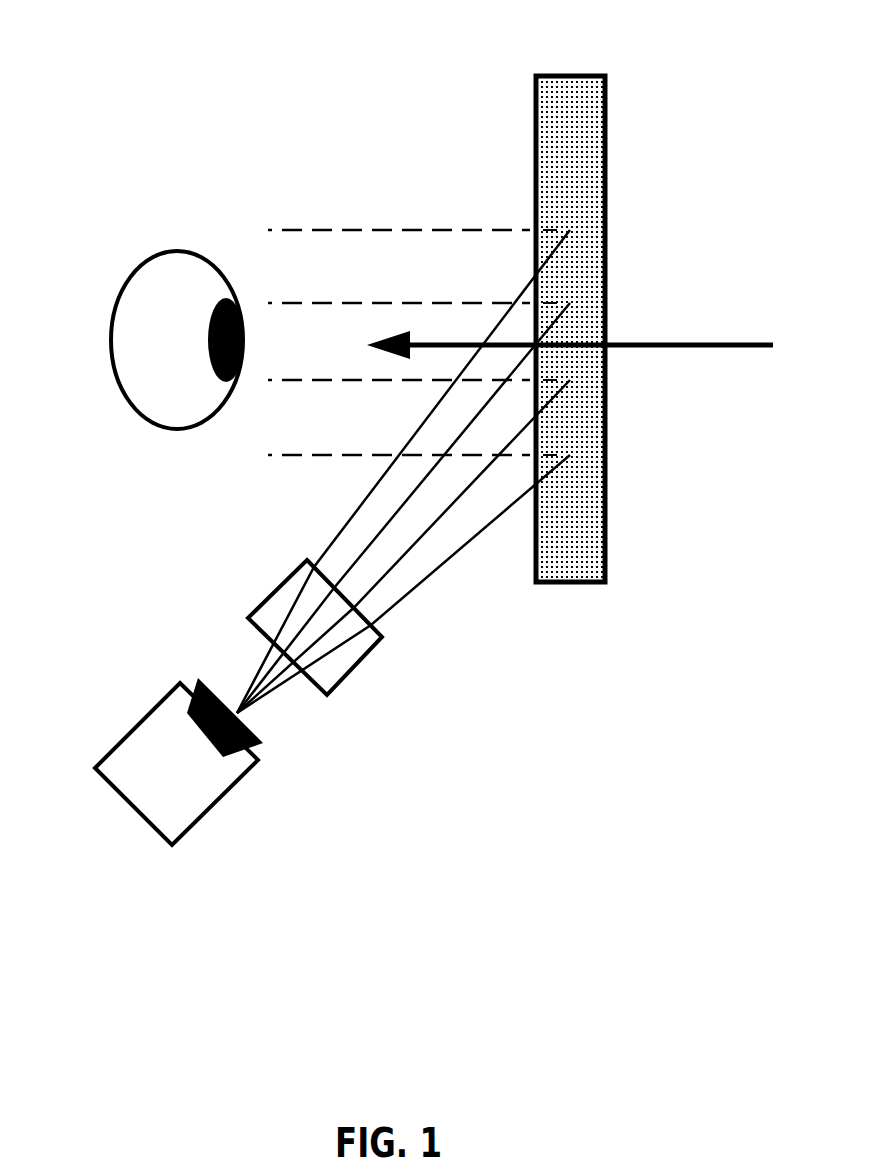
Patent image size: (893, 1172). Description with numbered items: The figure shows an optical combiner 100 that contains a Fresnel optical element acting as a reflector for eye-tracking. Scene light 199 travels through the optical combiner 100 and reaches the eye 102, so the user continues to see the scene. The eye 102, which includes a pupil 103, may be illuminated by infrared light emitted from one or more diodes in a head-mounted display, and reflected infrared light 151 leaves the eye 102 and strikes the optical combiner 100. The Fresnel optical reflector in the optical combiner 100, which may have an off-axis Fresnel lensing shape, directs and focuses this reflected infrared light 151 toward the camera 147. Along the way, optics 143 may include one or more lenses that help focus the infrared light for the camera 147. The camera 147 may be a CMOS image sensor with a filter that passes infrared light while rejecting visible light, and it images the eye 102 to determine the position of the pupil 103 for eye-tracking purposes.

The optical combiner 100 is at (572, 587).
The eye 102 is at (153, 241).
The pupil 103 is at (213, 309).
The optics 143 is at (350, 672).
The camera 147 is at (210, 807).
The reflected infrared light 151 is at (573, 68).
The scene light 199 is at (609, 338).